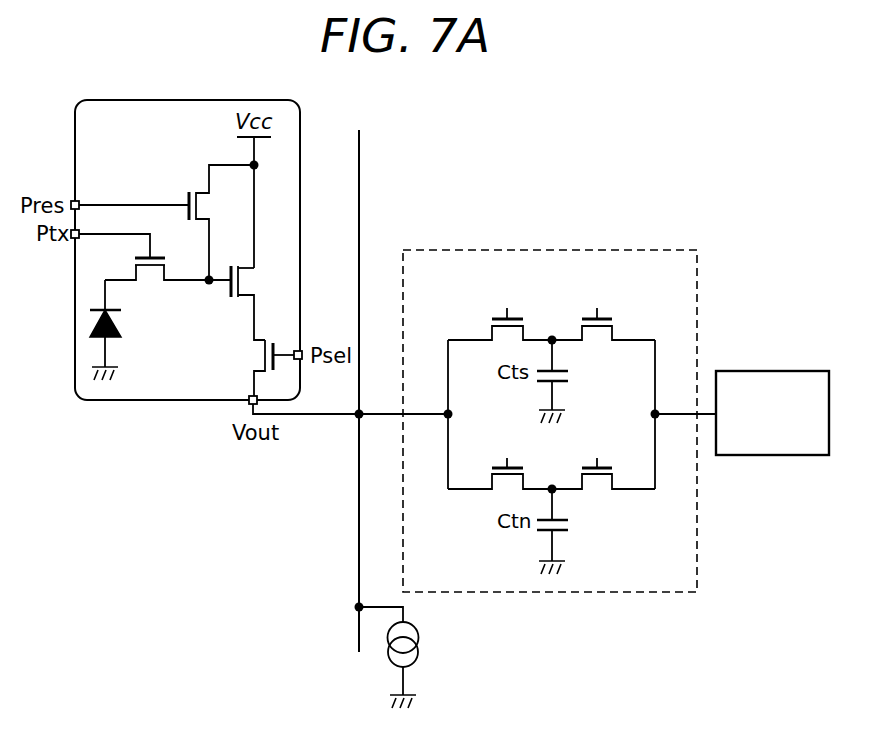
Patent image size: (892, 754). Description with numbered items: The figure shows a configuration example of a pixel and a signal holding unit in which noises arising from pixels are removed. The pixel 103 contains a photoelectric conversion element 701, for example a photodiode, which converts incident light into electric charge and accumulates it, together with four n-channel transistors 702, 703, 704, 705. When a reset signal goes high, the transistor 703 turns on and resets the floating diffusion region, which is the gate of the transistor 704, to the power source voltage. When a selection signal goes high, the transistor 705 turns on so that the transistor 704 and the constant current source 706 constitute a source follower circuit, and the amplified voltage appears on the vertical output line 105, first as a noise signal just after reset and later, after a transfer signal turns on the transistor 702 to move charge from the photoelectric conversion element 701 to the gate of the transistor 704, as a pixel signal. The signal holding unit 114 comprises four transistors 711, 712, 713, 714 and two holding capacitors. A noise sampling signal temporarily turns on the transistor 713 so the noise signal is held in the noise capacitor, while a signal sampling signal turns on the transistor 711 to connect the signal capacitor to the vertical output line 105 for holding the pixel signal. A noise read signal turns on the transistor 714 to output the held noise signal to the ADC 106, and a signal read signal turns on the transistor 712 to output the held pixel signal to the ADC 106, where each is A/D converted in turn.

The pixel 103 is at (212, 100).
The photoelectric conversion element 701 is at (90, 328).
The transistor 702 is at (132, 265).
The transistor 703 is at (190, 187).
The transistor 704 is at (226, 292).
The transistor 705 is at (257, 355).
The vertical output line 105 is at (360, 163).
The signal holding unit 114 is at (601, 250).
The transistor 711 is at (488, 320).
The transistor 712 is at (615, 322).
The transistor 713 is at (505, 487).
The transistor 714 is at (595, 487).
The ADC 106 is at (790, 370).
The current source 706 is at (420, 652).